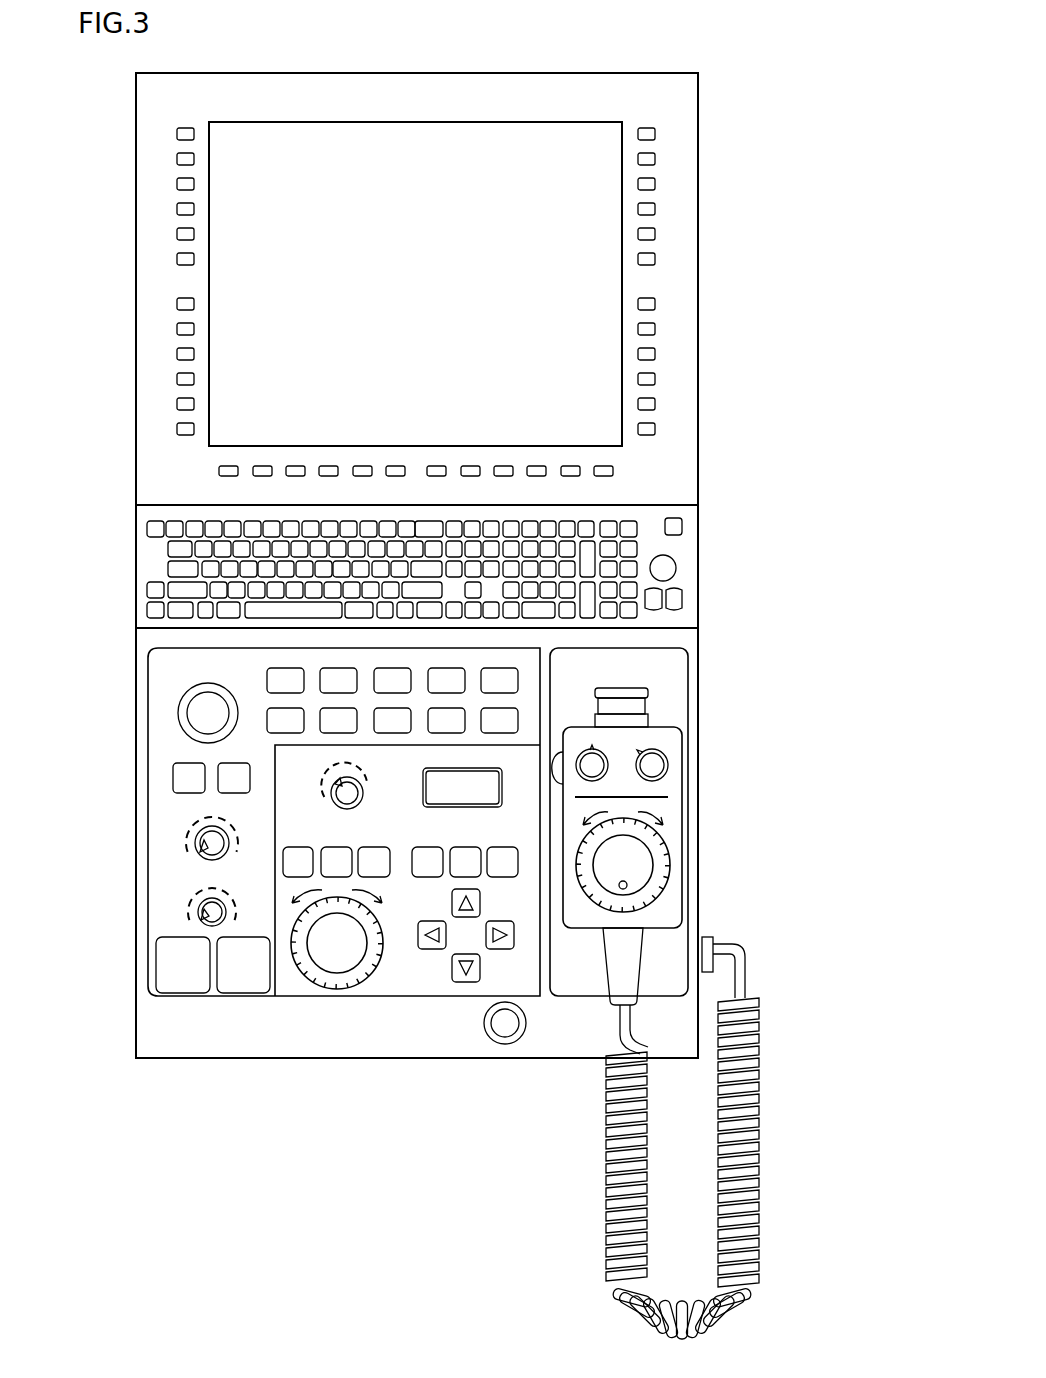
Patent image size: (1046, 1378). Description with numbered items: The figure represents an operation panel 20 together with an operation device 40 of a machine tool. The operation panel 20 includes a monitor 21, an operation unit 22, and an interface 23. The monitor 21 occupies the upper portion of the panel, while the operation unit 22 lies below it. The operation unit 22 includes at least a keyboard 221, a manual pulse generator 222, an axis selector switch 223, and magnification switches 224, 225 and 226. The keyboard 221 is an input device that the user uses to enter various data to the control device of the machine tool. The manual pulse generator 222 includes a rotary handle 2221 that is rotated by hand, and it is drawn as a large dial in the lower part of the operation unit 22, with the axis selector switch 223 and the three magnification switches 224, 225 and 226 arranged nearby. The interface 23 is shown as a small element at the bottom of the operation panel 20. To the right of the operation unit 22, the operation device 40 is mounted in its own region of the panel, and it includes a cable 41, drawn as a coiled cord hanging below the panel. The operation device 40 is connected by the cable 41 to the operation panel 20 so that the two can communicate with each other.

The operation panel 20 is at (709, 69).
The monitor 21 is at (607, 282).
The operation unit 22 is at (63, 505).
The keyboard 221 is at (688, 563).
The manual pulse generator 222 is at (343, 990).
The rotary handle 2221 is at (313, 970).
The axis selector switch 223 is at (365, 797).
The magnification switch 224 is at (283, 870).
The magnification switch 225 is at (328, 847).
The magnification switch 226 is at (387, 877).
The interface 23 is at (508, 1045).
The operation device 40 is at (700, 830).
The cable 41 is at (760, 1178).